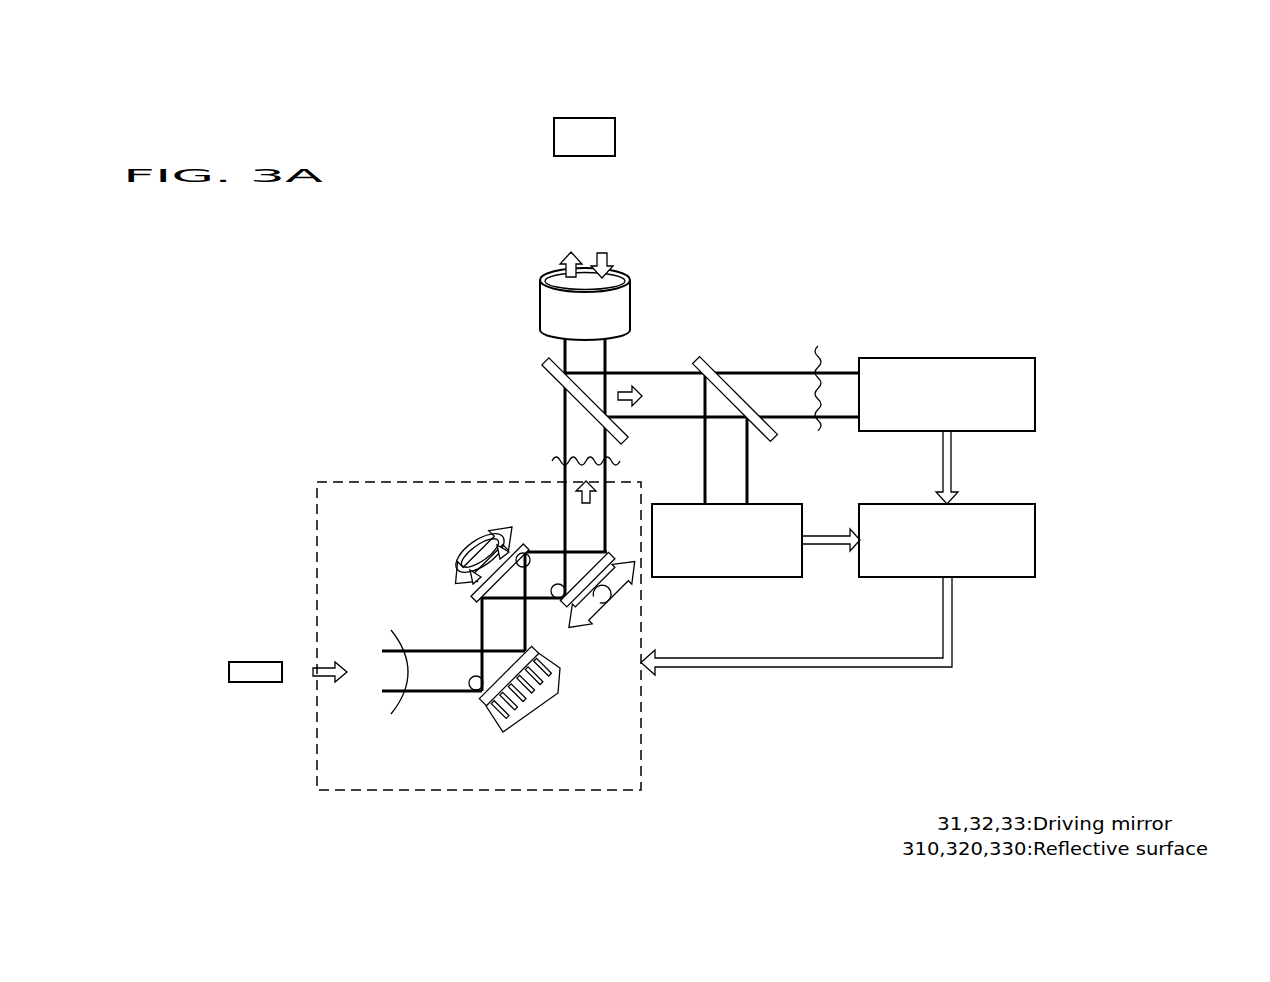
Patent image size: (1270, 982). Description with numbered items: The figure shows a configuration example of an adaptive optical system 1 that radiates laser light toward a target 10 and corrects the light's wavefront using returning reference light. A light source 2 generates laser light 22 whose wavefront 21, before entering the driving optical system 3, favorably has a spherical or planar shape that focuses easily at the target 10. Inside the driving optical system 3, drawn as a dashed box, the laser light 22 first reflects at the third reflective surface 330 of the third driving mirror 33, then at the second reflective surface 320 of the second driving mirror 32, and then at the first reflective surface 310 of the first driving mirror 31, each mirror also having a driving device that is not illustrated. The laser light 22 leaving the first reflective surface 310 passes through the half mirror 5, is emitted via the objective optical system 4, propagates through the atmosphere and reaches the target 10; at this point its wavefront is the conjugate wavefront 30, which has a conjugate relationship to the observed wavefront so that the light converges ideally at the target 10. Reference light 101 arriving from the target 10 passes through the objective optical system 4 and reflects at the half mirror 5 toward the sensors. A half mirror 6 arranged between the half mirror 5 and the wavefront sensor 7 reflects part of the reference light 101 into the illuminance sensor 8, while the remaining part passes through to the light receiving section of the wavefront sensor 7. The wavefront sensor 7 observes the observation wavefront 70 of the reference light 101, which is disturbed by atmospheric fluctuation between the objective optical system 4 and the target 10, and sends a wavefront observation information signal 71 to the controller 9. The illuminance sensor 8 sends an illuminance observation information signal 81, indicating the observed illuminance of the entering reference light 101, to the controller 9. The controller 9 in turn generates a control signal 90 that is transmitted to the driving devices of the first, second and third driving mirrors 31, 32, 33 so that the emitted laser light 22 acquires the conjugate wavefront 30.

The adaptive optical system 1 is at (832, 140).
The target 10 is at (563, 138).
The reference light 101 is at (607, 262).
The laser light 22 is at (567, 258).
The objective optical system 4 is at (540, 312).
The half mirror 5 is at (543, 362).
The half mirror 6 is at (705, 356).
The observation wavefront 70 is at (874, 375).
The wavefront sensor 7 is at (1036, 393).
The wavefront observation information signal 71 is at (952, 459).
The illuminance sensor 8 is at (791, 499).
The illuminance observation information signal 81 is at (822, 548).
The controller 9 is at (1037, 541).
The control signal 90 is at (886, 668).
The conjugate wavefront 30 is at (556, 458).
The driving optical system 3 is at (400, 481).
The light source 2 is at (236, 664).
The wavefront 21 is at (406, 622).
The first driving mirror 31 is at (591, 624).
The second driving mirror 32 is at (460, 570).
The third driving mirror 33 is at (547, 700).
The first reflective surface 310 is at (556, 598).
The second reflective surface 320 is at (528, 546).
The third reflective surface 330 is at (477, 690).